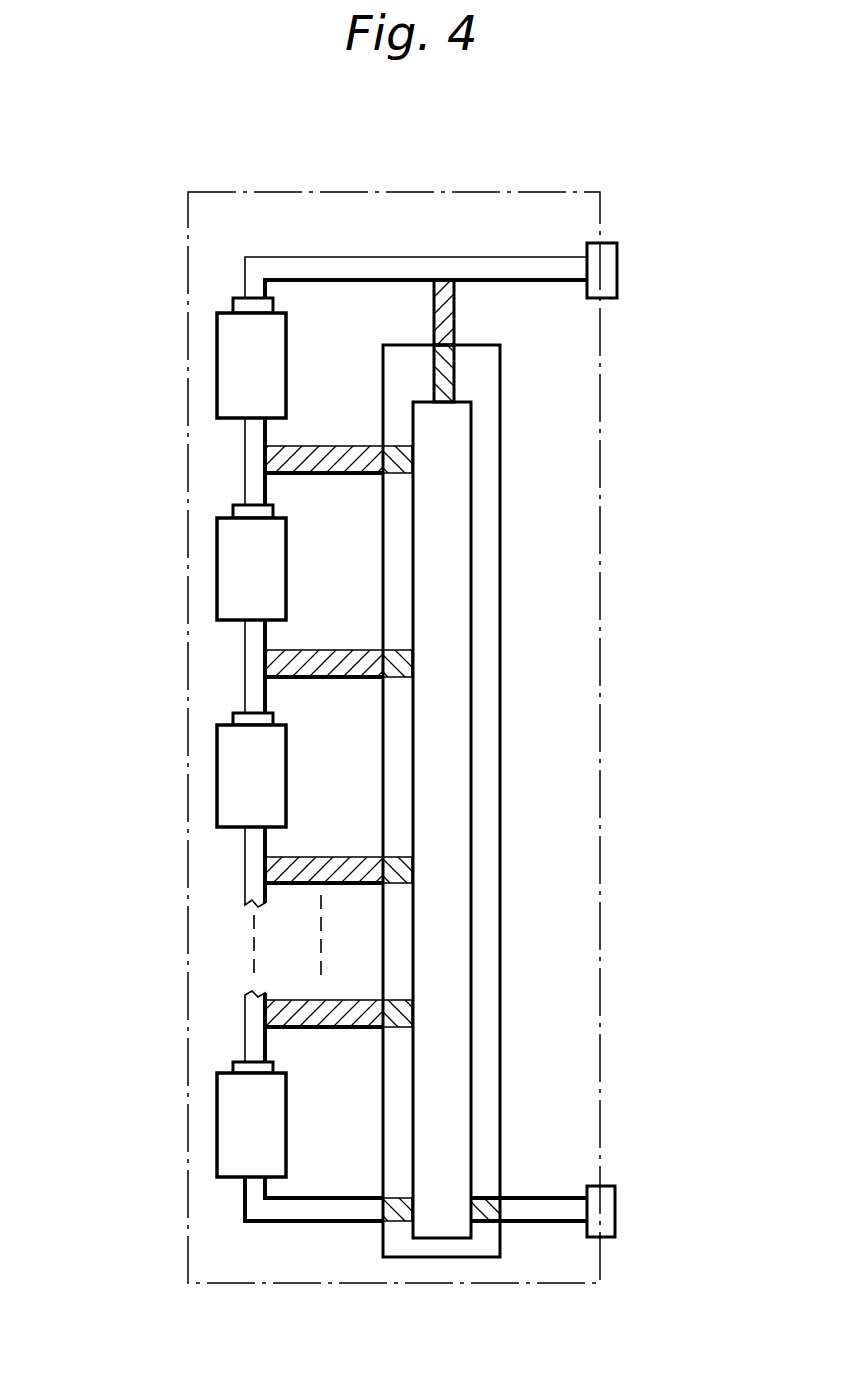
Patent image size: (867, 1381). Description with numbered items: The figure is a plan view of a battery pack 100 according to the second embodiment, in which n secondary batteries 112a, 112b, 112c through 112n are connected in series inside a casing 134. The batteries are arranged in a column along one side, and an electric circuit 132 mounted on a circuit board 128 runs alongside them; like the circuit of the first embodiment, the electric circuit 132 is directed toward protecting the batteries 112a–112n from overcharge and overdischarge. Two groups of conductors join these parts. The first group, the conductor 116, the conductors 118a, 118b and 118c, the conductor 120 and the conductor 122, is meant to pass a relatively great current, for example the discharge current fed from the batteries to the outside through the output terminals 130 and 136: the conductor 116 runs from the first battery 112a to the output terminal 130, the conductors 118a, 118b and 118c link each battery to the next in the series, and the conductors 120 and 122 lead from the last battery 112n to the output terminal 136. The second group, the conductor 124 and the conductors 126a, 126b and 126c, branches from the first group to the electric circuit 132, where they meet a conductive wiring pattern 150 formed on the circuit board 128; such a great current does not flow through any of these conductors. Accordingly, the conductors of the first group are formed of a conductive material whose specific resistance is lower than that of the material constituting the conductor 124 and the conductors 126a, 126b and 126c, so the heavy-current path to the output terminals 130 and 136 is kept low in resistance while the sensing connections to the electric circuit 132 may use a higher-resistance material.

The battery pack 100 is at (457, 155).
The casing 134 is at (488, 192).
The conductor 116 is at (388, 257).
The output terminal 130 is at (617, 250).
The conductor 124 is at (455, 318).
The conductive wiring pattern 150 is at (455, 377).
The secondary battery 112a is at (287, 327).
The conductor 118a is at (243, 455).
The conductor 126a is at (300, 446).
The secondary battery 112b is at (287, 552).
The conductor 118b is at (243, 668).
The conductor 126b is at (300, 650).
The secondary battery 112c is at (287, 759).
The conductor 118c is at (243, 872).
The conductor 126c is at (298, 857).
The electric circuit 132 is at (471, 720).
The circuit board 128 is at (500, 872).
The secondary battery 112n is at (287, 1124).
The conductor 120 is at (282, 1225).
The conductor 122 is at (560, 1225).
The output terminal 136 is at (612, 1186).